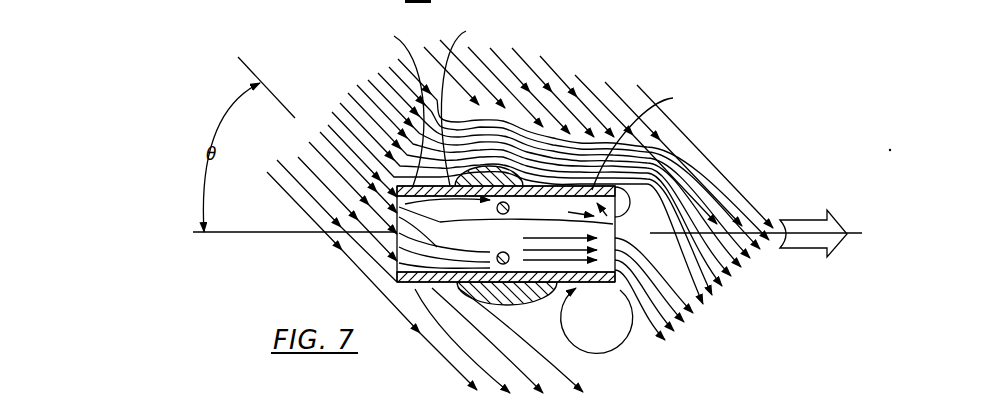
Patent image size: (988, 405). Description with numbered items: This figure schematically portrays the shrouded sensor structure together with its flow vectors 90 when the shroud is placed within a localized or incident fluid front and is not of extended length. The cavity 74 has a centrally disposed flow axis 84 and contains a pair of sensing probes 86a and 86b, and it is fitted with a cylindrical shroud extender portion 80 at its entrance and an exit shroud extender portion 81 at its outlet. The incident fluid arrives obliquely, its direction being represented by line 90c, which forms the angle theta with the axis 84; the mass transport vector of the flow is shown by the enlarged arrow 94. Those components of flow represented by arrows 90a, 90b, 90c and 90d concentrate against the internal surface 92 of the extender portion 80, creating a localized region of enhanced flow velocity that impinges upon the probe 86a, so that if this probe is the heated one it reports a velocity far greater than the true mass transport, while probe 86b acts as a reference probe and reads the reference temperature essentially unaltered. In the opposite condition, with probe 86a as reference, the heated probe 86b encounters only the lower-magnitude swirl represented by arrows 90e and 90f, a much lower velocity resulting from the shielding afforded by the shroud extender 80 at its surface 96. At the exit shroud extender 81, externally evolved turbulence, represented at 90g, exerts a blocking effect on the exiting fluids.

The cavity 74 is at (518, 186).
The shroud extender portion 80 is at (397, 105).
The exit shroud extender portion 81 is at (644, 139).
The flow axis 84 is at (258, 233).
The probe 86a is at (509, 256).
The probe 86b is at (510, 208).
The flow vectors 90 is at (352, 92).
The flow component arrow 90a is at (296, 157).
The flow component arrow 90b is at (309, 141).
The incident fluid flow direction line 90c is at (318, 131).
The flow component arrow 90d is at (328, 124).
The swirl arrow 90e is at (478, 221).
The swirl arrow 90f is at (437, 221).
The turbulence 90g is at (638, 212).
The internal surface 92 is at (410, 284).
The enlarged arrow 94 is at (800, 220).
The surface 96 is at (465, 103).